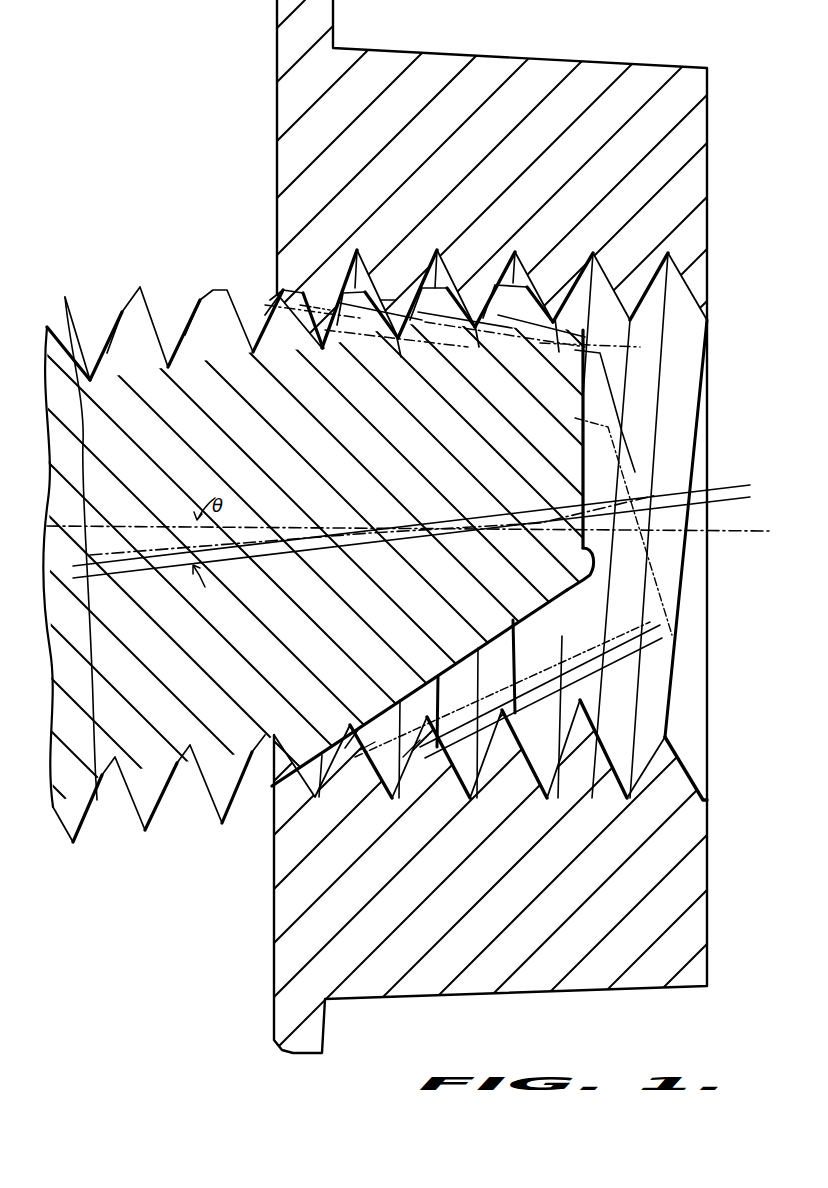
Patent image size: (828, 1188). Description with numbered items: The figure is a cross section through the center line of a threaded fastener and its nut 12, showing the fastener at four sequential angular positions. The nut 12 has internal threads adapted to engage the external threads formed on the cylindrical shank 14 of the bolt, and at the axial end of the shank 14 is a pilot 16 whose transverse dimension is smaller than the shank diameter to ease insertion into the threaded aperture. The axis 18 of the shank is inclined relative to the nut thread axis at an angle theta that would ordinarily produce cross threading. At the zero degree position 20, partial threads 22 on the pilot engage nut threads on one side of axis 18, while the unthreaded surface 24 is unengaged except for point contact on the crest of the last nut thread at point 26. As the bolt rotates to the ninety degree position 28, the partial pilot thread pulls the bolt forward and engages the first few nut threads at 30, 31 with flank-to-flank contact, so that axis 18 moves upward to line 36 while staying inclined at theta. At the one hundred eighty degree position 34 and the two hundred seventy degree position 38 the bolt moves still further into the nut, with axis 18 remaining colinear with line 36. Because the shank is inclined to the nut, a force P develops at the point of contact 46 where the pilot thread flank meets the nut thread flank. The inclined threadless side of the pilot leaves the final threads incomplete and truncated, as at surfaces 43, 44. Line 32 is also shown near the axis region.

The nut 12 is at (598, 68).
The cylindrical shank 14 is at (130, 407).
The pilot 16 is at (488, 583).
The axis of the shank 18 is at (147, 573).
The zero degree position 20 is at (588, 570).
The partial threads 22 is at (520, 300).
The unthreaded surface 24 is at (460, 372).
The point of contact 26 is at (350, 747).
The ninety degree position 28 is at (650, 622).
The flank-to-flank contact location 30 is at (292, 821).
The flank-to-flank contact location 31 is at (403, 757).
The coupling axis 32 is at (740, 537).
The one hundred eighty degree position 34 is at (633, 473).
The line 36 is at (728, 484).
The two hundred seventy degree position 38 is at (647, 397).
The incomplete truncated thread surface 43 is at (300, 305).
The incomplete truncated thread surface 44 is at (380, 300).
The point of contact 46 is at (360, 750).